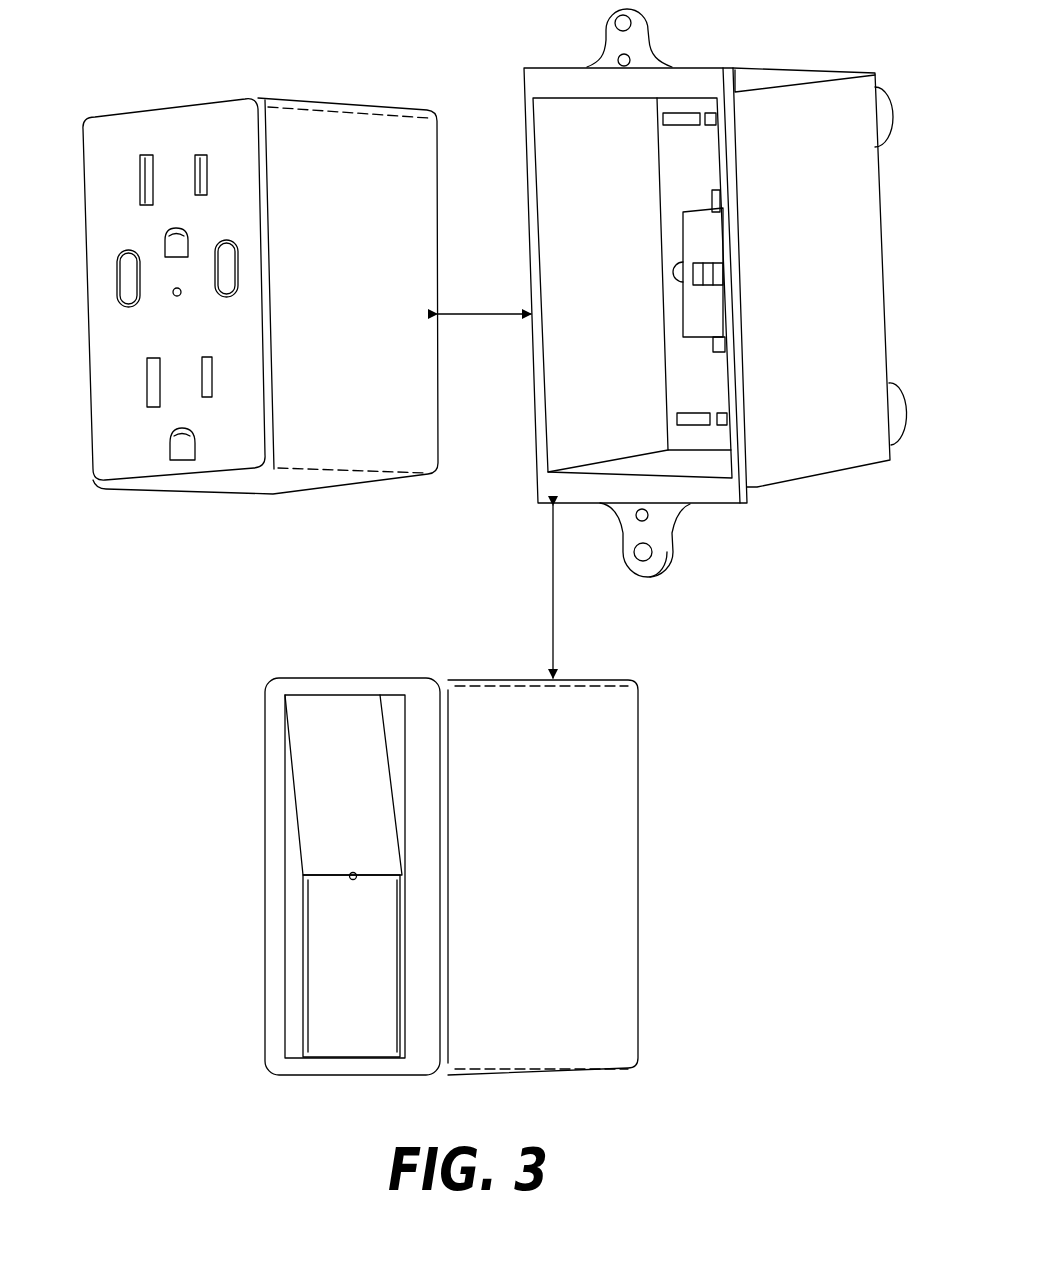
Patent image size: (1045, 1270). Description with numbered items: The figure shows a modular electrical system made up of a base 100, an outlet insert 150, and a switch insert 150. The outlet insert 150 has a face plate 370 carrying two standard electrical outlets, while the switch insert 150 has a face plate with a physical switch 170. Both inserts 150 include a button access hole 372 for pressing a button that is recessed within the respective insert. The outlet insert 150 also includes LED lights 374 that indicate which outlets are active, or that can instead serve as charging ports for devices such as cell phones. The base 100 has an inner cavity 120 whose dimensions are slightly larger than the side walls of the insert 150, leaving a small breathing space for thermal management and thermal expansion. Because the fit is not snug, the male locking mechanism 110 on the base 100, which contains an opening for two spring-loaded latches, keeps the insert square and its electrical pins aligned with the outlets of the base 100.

The base 100 is at (801, 95).
The locking mechanism 110 is at (705, 234).
The inner cavity 120 is at (584, 122).
The insert 150 is at (353, 110).
The physical switch 170 is at (310, 758).
The face plate 370 is at (181, 138).
The button access hole 372 is at (173, 297).
The LED lights 374 is at (128, 277).